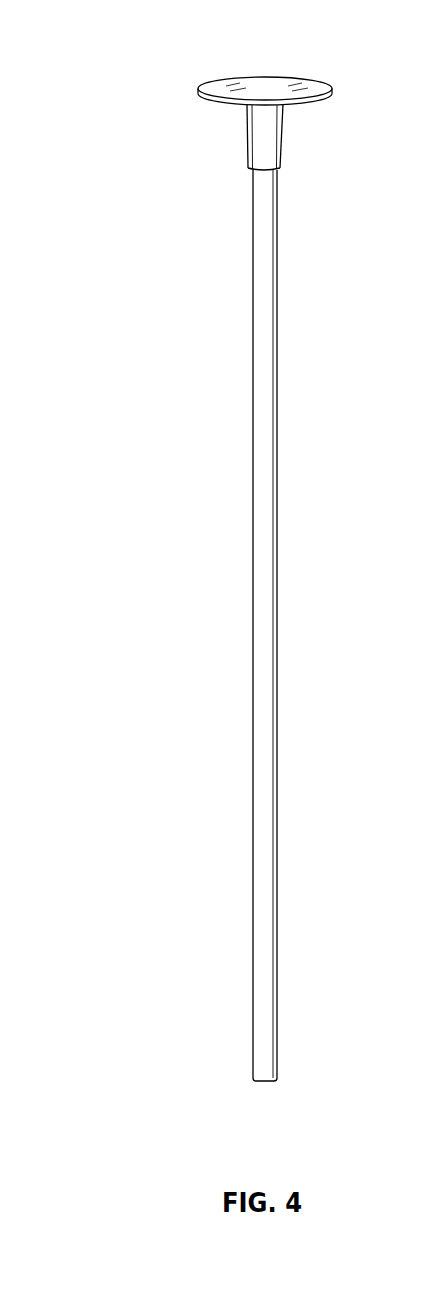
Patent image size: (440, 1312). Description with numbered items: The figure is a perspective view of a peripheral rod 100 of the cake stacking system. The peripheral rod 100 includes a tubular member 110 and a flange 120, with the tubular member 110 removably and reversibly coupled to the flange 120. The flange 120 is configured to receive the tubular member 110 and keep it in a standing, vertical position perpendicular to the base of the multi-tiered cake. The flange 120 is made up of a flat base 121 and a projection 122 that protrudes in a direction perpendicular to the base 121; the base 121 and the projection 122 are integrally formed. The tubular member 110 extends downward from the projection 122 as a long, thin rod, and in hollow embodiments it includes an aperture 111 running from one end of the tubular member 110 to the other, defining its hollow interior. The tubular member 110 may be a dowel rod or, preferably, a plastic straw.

The peripheral rod 100 is at (115, 72).
The tubular member 110 is at (253, 487).
The aperture 111 is at (261, 1100).
The flange 120 is at (195, 82).
The flat base 121 is at (332, 88).
The projection 122 is at (278, 156).